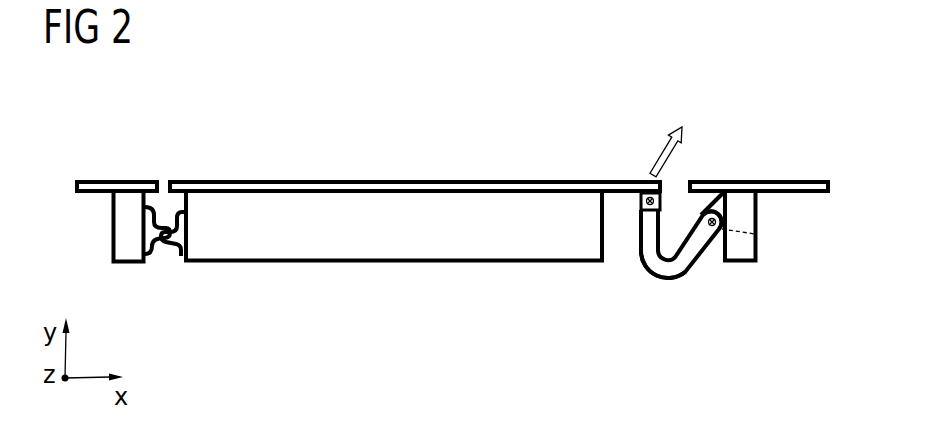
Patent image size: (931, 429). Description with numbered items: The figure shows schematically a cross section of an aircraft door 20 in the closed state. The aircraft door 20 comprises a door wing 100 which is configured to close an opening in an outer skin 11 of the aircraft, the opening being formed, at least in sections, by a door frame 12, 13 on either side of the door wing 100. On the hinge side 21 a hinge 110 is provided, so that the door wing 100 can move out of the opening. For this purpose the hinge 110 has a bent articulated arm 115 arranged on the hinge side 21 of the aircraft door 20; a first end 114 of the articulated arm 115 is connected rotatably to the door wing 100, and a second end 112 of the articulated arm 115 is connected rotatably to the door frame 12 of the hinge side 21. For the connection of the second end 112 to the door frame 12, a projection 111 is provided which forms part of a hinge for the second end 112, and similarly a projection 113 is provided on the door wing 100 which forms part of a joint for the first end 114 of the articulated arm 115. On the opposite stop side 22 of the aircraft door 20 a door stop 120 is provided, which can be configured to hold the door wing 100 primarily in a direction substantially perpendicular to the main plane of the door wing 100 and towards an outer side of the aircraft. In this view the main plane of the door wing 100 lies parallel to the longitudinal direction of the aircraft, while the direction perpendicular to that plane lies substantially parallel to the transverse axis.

The outer skin 11 is at (100, 180).
The door frame 12 is at (745, 213).
The door frame 13 is at (128, 253).
The aircraft door 20 is at (757, 78).
The hinge side 21 is at (634, 144).
The stop side 22 is at (155, 136).
The door wing 100 is at (397, 180).
The hinge 110 is at (689, 243).
The projection 111 is at (713, 205).
The second end 112 is at (740, 236).
The projection 113 is at (637, 203).
The first end 114 is at (645, 195).
The articulated arm 115 is at (668, 272).
The door stop 120 is at (172, 276).